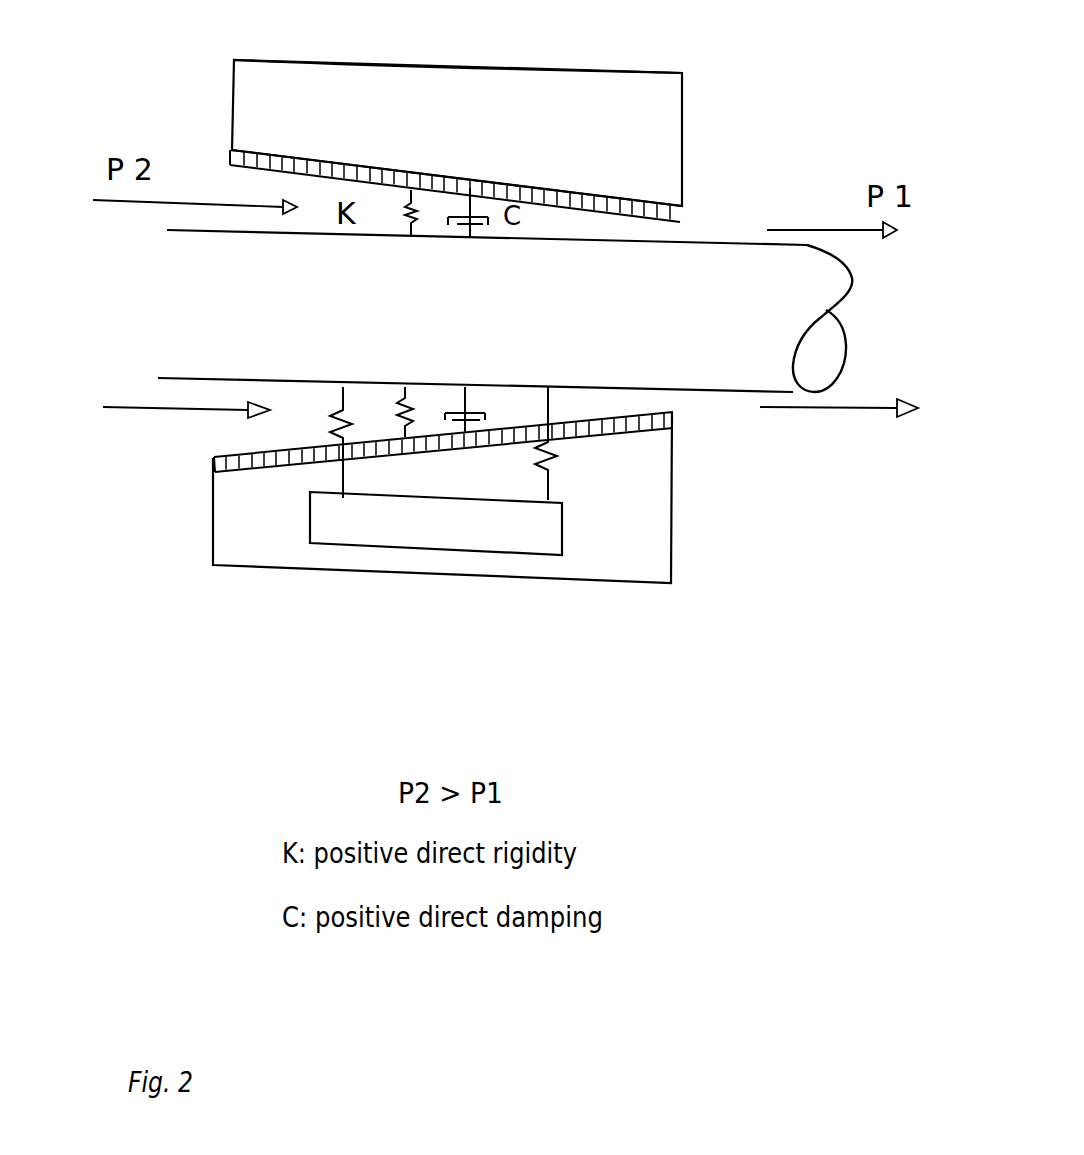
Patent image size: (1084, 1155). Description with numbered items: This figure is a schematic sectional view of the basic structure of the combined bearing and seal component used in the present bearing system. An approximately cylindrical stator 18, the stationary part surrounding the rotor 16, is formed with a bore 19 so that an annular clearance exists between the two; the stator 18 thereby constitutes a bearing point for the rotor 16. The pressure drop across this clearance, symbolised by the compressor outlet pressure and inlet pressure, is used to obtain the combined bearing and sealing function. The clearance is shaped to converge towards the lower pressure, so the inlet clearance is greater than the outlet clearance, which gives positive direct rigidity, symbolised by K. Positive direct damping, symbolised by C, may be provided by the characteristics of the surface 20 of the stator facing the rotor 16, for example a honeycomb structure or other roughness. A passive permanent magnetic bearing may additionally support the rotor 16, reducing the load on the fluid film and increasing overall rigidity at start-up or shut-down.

The rotor 16 is at (718, 258).
The stator 18 is at (568, 95).
The bore 19 is at (613, 437).
The surface of the stator 20 is at (571, 198).